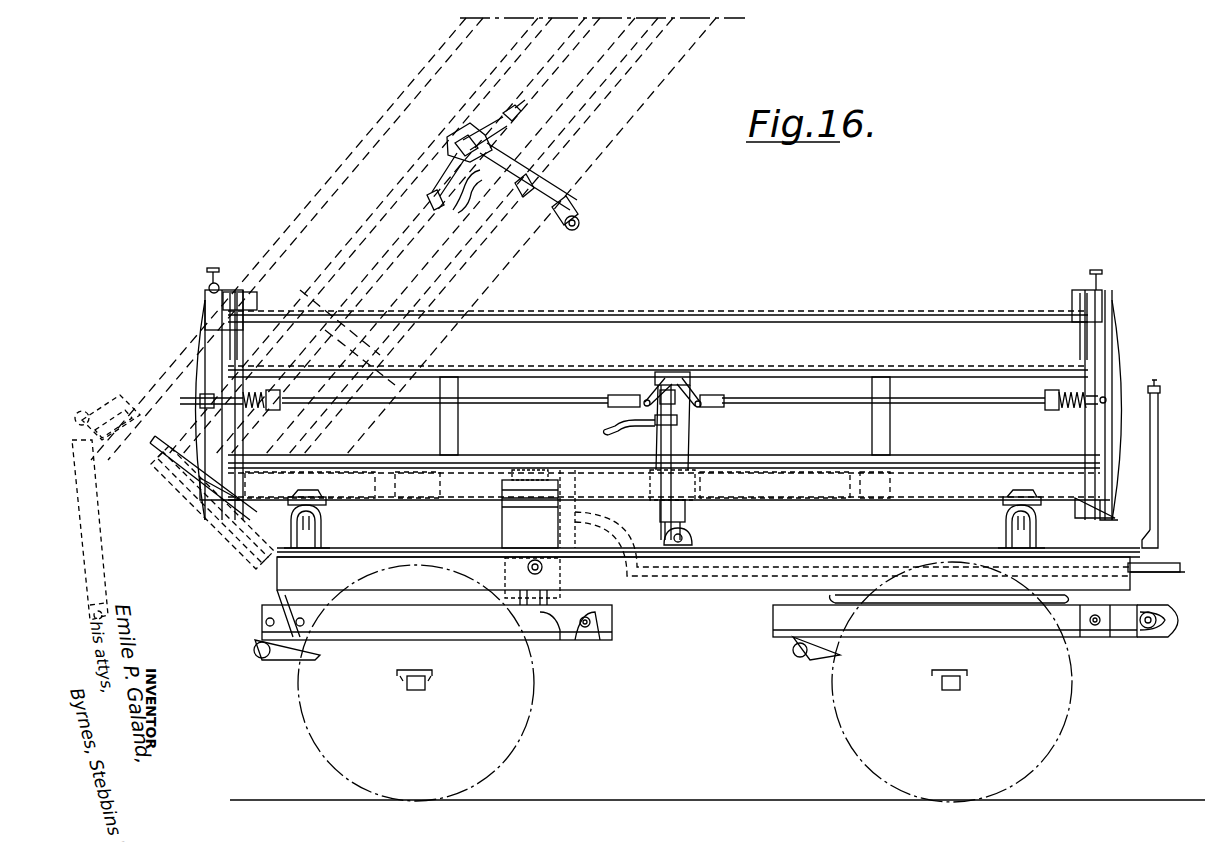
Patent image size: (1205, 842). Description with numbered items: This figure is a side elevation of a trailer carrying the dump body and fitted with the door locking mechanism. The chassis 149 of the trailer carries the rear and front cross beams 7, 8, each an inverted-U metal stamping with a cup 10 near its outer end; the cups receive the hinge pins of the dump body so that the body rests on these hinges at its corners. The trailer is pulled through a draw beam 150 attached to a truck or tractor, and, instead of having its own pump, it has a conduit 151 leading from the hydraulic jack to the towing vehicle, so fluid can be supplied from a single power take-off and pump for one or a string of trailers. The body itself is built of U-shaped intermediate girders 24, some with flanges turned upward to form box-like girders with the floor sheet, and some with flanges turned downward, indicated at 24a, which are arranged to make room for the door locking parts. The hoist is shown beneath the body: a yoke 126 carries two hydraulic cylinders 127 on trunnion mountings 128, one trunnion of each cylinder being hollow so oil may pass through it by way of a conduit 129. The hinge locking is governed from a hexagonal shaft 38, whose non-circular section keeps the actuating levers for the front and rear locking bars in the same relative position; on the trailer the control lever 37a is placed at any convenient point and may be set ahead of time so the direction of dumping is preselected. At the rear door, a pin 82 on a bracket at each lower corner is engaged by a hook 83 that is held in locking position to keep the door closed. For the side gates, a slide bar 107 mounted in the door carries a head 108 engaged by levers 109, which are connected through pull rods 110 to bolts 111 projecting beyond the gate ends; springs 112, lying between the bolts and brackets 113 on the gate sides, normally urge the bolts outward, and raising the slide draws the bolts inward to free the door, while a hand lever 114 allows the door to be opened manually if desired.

The cross beam 7 is at (322, 528).
The cross beam 8 is at (1004, 524).
The cup 10 is at (316, 508).
The intermediate girder 24 is at (893, 496).
The intermediate cross girder with downwardly directed flanges 24a is at (696, 487).
The control lever 37a is at (1158, 395).
The hexagonal shaft 38 is at (758, 547).
The pin 82 is at (212, 507).
The hook 83 is at (200, 480).
The slide bar 107 is at (672, 436).
The head 108 is at (668, 376).
The lever 109 is at (692, 386).
The pull rod 110 is at (830, 400).
The bolt 111 is at (200, 401).
The spring 112 is at (1075, 410).
The bracket 113 is at (272, 411).
The hand lever 114 is at (628, 430).
The yoke 126 is at (497, 502).
The hydraulic cylinder 127 is at (506, 560).
The trunnion mounting 128 is at (527, 540).
The conduit 129 is at (580, 573).
The chassis 149 is at (708, 586).
The draw beam 150 is at (1168, 635).
The conduit 151 is at (1165, 568).